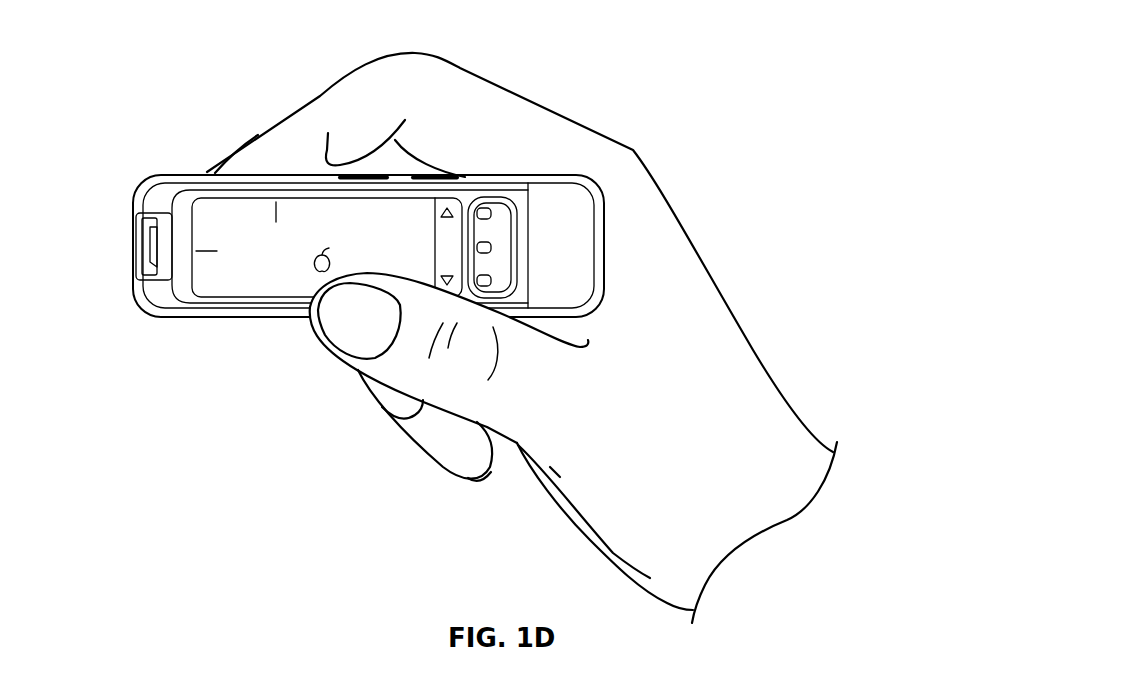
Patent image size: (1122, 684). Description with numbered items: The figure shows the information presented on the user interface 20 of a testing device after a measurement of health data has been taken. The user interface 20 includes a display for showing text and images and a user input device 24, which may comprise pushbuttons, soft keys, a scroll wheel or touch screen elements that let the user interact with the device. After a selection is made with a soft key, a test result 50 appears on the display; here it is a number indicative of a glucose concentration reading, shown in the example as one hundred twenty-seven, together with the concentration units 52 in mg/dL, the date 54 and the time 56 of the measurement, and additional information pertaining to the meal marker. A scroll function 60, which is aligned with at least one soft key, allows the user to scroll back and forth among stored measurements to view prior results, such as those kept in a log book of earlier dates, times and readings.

The user interface 20 is at (413, 205).
The user input device 24 is at (497, 217).
The test result 50 is at (260, 287).
The concentration units 52 is at (203, 270).
The date 54 is at (208, 203).
The time 56 is at (299, 203).
The scroll function 60 is at (453, 240).